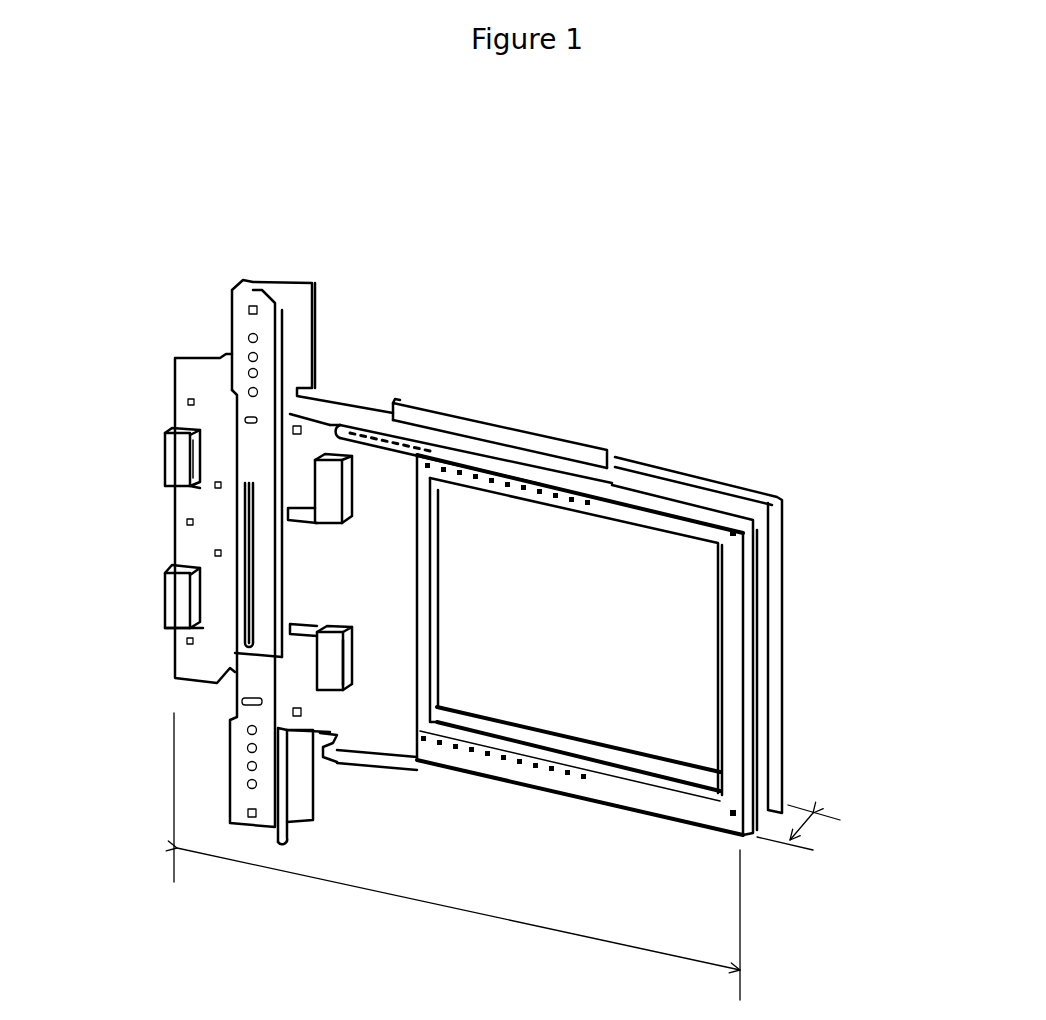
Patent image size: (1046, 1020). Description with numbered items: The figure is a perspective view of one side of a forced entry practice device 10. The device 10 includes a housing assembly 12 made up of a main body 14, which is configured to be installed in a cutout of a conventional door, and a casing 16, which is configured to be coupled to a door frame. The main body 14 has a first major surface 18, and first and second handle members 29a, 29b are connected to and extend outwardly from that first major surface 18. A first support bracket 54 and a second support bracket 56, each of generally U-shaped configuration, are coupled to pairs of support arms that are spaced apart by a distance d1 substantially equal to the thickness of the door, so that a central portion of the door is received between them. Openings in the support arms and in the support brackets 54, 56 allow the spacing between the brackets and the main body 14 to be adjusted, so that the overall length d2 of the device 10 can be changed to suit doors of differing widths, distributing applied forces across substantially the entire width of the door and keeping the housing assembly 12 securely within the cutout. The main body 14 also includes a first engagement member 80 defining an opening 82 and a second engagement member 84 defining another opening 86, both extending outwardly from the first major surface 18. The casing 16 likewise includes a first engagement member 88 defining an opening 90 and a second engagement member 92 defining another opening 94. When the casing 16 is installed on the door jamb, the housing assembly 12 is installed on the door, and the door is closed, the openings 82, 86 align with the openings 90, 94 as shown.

The forced entry practice device 10 is at (630, 290).
The housing assembly 12 is at (395, 398).
The main body 14 is at (449, 534).
The casing 16 is at (196, 533).
The first major surface 18 is at (385, 607).
The first handle member 29a is at (385, 771).
The second handle member 29b is at (344, 432).
The first support bracket 54 is at (742, 695).
The second support bracket 56 is at (784, 512).
The first engagement member 80 is at (325, 482).
The opening 82 is at (353, 492).
The second engagement member 84 is at (330, 668).
The opening 86 is at (352, 652).
The first engagement member 88 is at (176, 461).
The opening 90 is at (190, 452).
The second engagement member 92 is at (174, 609).
The opening 94 is at (186, 633).
The distance d1 is at (808, 828).
The overall length d2 is at (437, 903).